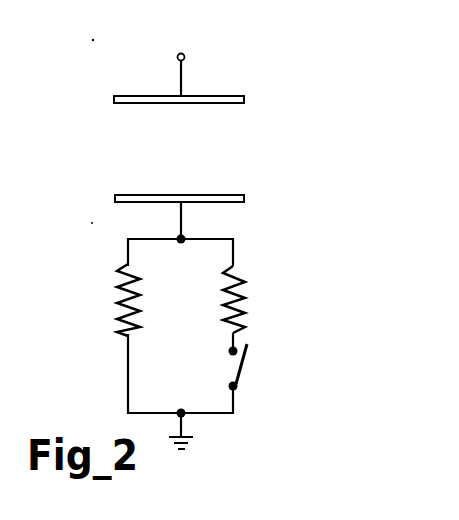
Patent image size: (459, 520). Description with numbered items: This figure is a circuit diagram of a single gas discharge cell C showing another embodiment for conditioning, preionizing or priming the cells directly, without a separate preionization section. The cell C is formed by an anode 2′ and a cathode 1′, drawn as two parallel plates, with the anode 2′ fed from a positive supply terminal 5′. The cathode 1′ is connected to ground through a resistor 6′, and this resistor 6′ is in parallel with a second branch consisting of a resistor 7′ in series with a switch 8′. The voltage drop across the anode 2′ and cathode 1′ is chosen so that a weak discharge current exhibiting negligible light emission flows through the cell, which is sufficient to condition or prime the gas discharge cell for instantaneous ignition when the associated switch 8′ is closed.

The cathode 1′ is at (244, 202).
The anode 2′ is at (241, 96).
The voltage supply terminal 5′ is at (227, 38).
The resistor 6′ is at (117, 291).
The resistor 7′ is at (245, 291).
The switch 8′ is at (241, 370).
The cell C is at (238, 185).